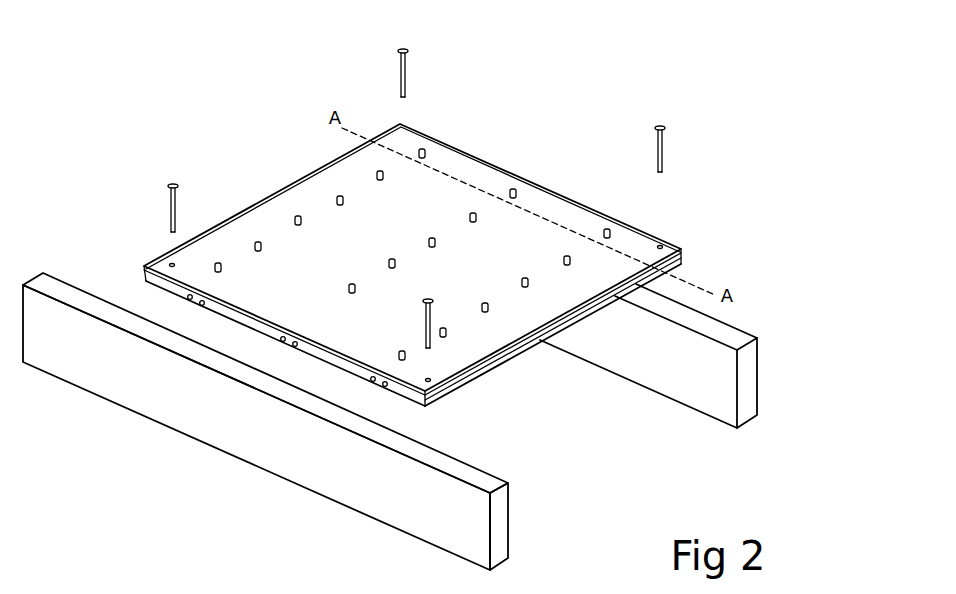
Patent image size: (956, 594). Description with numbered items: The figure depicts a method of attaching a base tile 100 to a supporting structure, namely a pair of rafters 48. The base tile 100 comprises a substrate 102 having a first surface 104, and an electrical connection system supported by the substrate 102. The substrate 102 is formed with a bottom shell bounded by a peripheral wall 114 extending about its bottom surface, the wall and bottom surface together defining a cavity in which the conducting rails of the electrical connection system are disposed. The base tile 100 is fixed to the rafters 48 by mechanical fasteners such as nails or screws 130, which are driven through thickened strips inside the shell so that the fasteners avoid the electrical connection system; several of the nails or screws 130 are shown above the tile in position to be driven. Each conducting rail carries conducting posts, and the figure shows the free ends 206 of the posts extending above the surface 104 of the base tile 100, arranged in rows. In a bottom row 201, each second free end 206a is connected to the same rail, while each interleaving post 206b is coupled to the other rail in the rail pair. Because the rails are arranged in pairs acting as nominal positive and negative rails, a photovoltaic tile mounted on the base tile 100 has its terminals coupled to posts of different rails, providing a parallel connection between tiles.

The base tile 100 is at (215, 123).
The substrate 102 is at (575, 192).
The first surface 104 is at (408, 200).
The peripheral wall 114 is at (677, 264).
The nails or screws 130 is at (170, 200).
The bottom row 201 is at (639, 220).
The free end 206 is at (218, 263).
The second free end 206a is at (406, 356).
The interleaving post 206b is at (447, 333).
The rafters 48 is at (757, 368).